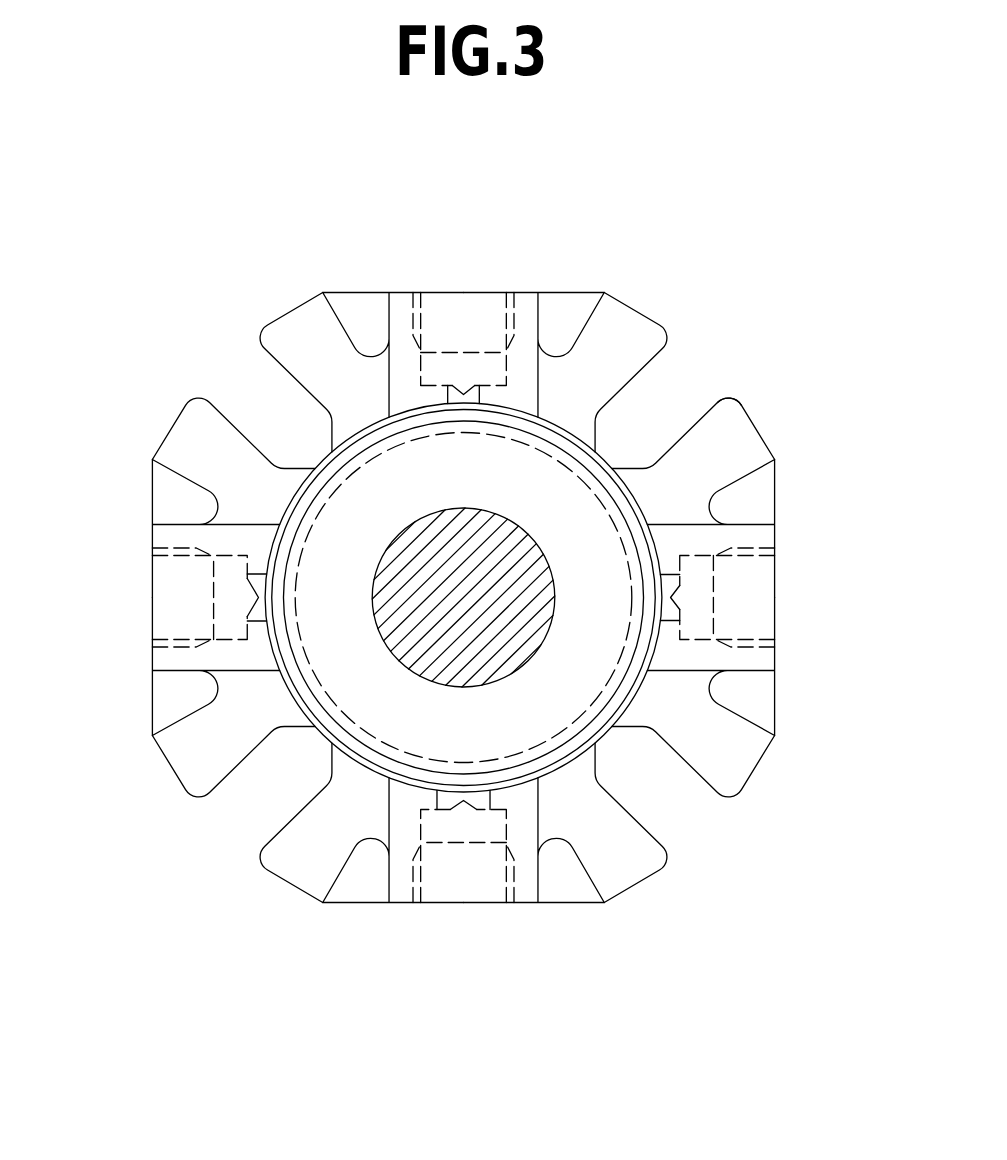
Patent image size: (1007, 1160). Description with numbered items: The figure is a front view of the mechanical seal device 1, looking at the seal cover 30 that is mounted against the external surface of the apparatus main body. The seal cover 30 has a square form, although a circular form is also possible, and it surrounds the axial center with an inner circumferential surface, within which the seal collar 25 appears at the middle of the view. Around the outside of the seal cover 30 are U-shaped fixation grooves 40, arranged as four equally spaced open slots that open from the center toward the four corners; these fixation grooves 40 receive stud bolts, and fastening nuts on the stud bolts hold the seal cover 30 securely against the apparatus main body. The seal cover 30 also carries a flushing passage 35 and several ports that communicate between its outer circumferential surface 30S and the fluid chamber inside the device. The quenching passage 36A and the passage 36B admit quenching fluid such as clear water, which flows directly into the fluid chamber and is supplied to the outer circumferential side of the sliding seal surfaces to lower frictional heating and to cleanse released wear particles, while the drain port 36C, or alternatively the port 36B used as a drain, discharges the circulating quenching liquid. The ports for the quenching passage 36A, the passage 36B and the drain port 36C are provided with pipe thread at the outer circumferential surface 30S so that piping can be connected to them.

The mechanical seal device 1 is at (638, 287).
The seal collar 25 is at (580, 660).
The seal cover 30 is at (302, 343).
The outer circumferential surface 30S is at (753, 413).
The flushing passage 35 is at (472, 291).
The quenching passage 36A is at (777, 598).
The drain port 36B is at (462, 904).
The drain port 36C is at (152, 596).
The fixation groove 40 is at (243, 430).